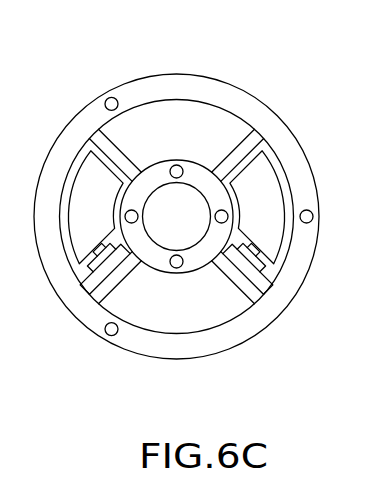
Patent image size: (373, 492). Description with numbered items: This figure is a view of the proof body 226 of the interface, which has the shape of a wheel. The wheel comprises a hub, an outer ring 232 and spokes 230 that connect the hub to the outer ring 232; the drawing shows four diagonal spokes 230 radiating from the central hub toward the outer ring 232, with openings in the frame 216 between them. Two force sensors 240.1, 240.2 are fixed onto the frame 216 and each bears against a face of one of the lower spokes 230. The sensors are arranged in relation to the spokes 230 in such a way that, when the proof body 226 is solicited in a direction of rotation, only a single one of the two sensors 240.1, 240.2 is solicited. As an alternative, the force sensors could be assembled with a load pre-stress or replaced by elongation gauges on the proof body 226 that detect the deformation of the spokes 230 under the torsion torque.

The proof body 226 is at (68, 335).
The outer ring 232 is at (165, 88).
The spokes 230 is at (240, 160).
The frame 216 is at (80, 182).
The force sensor 240.1 is at (114, 273).
The force sensor 240.2 is at (229, 272).